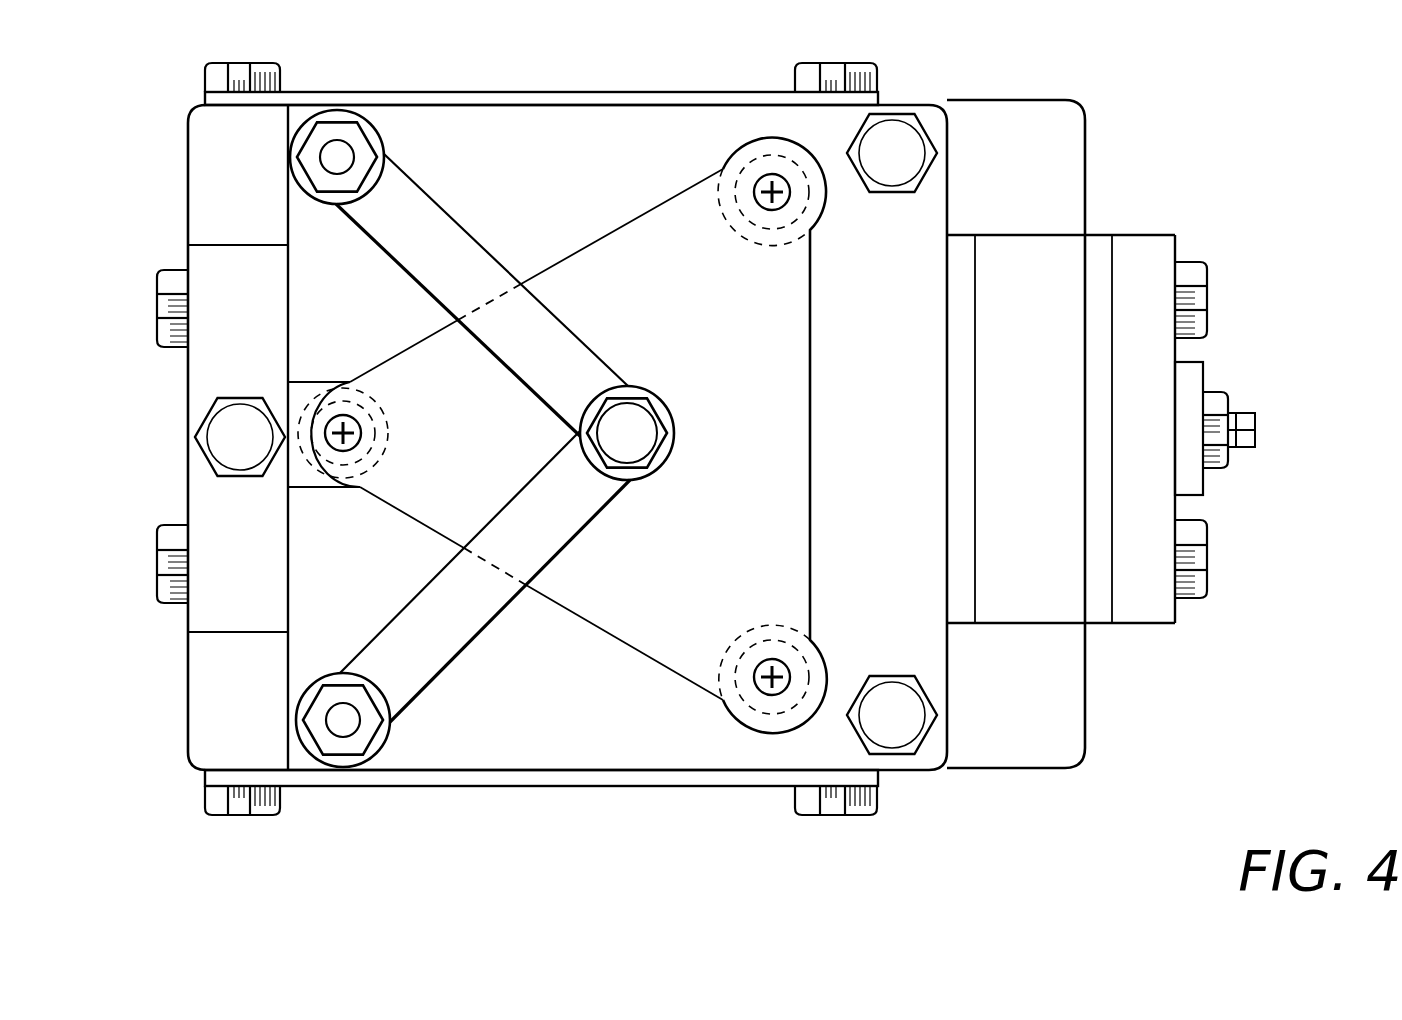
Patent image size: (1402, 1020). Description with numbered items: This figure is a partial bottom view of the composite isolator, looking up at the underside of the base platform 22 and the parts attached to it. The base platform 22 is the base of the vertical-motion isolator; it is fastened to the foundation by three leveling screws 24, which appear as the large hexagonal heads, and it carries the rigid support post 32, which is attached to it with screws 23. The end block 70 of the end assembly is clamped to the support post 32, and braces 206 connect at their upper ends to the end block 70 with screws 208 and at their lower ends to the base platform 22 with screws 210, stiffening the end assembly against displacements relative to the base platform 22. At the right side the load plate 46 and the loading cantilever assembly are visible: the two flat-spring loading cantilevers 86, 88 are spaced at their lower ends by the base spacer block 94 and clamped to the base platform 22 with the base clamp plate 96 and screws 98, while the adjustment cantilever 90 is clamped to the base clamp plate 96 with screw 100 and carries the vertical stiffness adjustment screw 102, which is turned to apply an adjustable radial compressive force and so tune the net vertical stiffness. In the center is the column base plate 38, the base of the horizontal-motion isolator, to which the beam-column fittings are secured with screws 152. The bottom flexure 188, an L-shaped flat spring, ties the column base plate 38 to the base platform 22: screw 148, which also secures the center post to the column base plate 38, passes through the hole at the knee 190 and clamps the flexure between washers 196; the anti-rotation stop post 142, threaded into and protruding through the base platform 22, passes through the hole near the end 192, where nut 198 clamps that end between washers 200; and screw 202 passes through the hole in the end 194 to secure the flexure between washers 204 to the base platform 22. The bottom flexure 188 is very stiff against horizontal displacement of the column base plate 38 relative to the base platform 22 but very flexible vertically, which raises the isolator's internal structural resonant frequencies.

The base platform 22 is at (595, 750).
The screws 23 is at (157, 310).
The leveling screws 24 is at (892, 135).
The rigid support post 32 is at (200, 490).
The column base plate 38 is at (812, 430).
The load plate 46 is at (1068, 142).
The end block 70 is at (200, 200).
The loading cantilever 86 is at (975, 278).
The loading cantilever 88 is at (1110, 600).
The adjustment cantilever 90 is at (1205, 490).
The base spacer block 94 is at (1045, 610).
The base clamp plate 96 is at (1170, 262).
The screws 98 is at (1208, 292).
The screw 100 is at (1232, 400).
The vertical stiffness adjustment screw 102 is at (1255, 440).
The stop post 142 is at (341, 727).
The screw 148 is at (645, 420).
The screws 152 is at (765, 225).
The bottom flexure 188 is at (490, 620).
The knee 190 is at (662, 362).
The end 192 is at (422, 745).
The end 194 is at (382, 78).
The washers 196 is at (660, 470).
The nut 198 is at (340, 688).
The washers 200 is at (378, 758).
The screw 202 is at (380, 150).
The washers 204 is at (318, 116).
The braces 206 is at (590, 92).
The screws 208 is at (243, 63).
The screws 210 is at (835, 63).